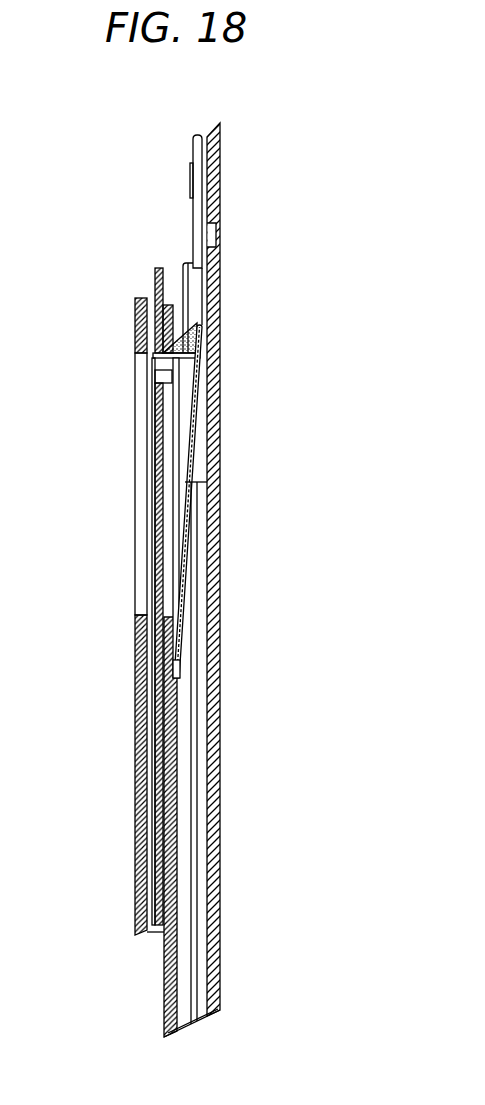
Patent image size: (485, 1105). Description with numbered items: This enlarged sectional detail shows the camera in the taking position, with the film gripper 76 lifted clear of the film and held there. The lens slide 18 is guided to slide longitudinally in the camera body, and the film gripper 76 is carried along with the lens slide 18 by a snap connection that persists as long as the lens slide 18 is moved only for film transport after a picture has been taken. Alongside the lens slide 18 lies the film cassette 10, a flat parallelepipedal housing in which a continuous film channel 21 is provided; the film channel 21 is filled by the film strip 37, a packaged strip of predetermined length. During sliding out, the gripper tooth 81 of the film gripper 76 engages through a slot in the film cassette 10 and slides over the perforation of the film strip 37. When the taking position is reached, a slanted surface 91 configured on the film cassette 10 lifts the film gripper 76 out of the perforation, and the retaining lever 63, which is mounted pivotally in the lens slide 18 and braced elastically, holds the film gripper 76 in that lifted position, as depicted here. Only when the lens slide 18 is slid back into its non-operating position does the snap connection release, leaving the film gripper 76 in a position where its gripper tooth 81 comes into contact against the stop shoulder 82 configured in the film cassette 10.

The lens slide 18 is at (215, 155).
The retaining lever 63 is at (190, 293).
The slanted surface 91 is at (138, 332).
The gripper tooth 81 is at (150, 372).
The film gripper 76 is at (178, 400).
The film strip 37 is at (157, 492).
The stop shoulder 82 is at (177, 603).
The film channel 21 is at (150, 657).
The film cassette 10 is at (140, 765).